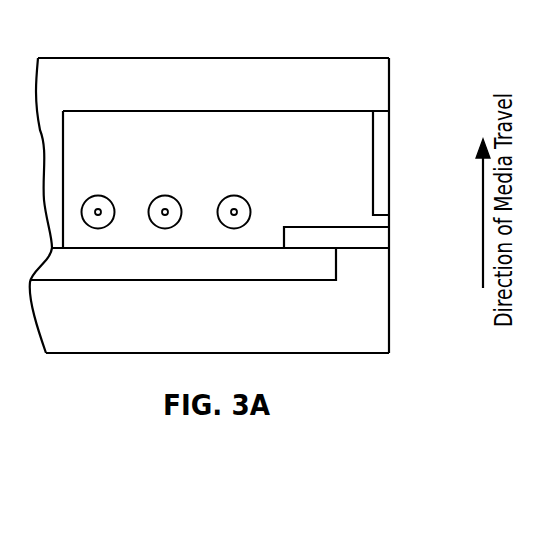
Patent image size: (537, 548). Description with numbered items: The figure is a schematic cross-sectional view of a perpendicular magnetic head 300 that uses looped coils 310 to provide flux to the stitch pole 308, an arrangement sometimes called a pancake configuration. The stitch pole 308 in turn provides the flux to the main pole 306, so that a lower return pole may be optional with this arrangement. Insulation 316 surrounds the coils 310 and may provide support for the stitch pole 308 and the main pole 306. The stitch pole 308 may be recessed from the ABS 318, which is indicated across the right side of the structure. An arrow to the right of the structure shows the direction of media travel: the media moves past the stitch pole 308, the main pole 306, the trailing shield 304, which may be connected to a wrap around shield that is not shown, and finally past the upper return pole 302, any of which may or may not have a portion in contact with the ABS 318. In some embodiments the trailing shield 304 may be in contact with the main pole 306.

The perpendicular magnetic head 300 is at (115, 41).
The upper return pole 302 is at (297, 92).
The trailing shield 304 is at (389, 143).
The main pole 306 is at (389, 229).
The stitch pole 308 is at (243, 276).
The looped coils 310 is at (92, 197).
The insulation 316 is at (336, 186).
The ABS 318 is at (390, 73).